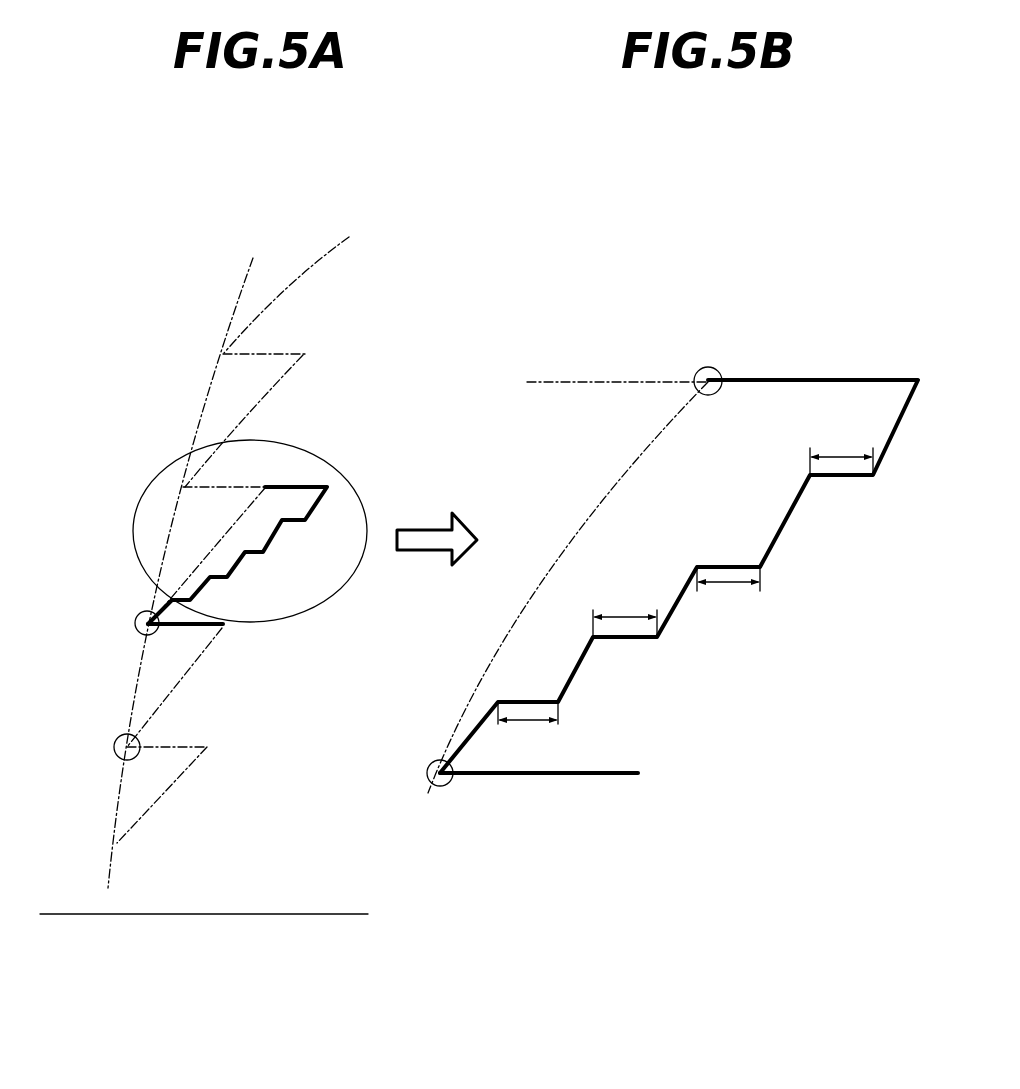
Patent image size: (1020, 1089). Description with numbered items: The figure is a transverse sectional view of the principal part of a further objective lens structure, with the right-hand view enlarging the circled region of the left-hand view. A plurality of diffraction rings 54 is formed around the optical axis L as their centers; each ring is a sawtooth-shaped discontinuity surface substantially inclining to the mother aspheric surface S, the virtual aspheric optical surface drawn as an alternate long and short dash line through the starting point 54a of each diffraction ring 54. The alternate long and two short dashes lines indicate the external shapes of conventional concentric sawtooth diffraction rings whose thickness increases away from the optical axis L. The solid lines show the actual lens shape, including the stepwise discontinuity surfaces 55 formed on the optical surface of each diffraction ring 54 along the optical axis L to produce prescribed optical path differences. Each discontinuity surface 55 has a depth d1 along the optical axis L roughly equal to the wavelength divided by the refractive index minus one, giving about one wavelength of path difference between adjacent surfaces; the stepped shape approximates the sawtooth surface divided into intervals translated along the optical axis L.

In FIG. 5A, the diffraction ring 54 is at (238, 319).
In FIG. 5B, the diffraction ring 54 is at (655, 500).
In FIG. 5A, the starting point 54a is at (158, 630).
In FIG. 5B, the starting point 54a is at (708, 367).
In FIG. 5A, the stepwise discontinuity surface 55 is at (292, 513).
In FIG. 5B, the stepwise discontinuity surface 55 is at (888, 443).
In FIG. 5A, the mother aspheric surface S is at (216, 370).
In FIG. 5B, the mother aspheric surface S is at (663, 422).
In FIG. 5A, the optical axis L is at (130, 915).
In FIG. 5B, the depth d1 is at (685, 591).